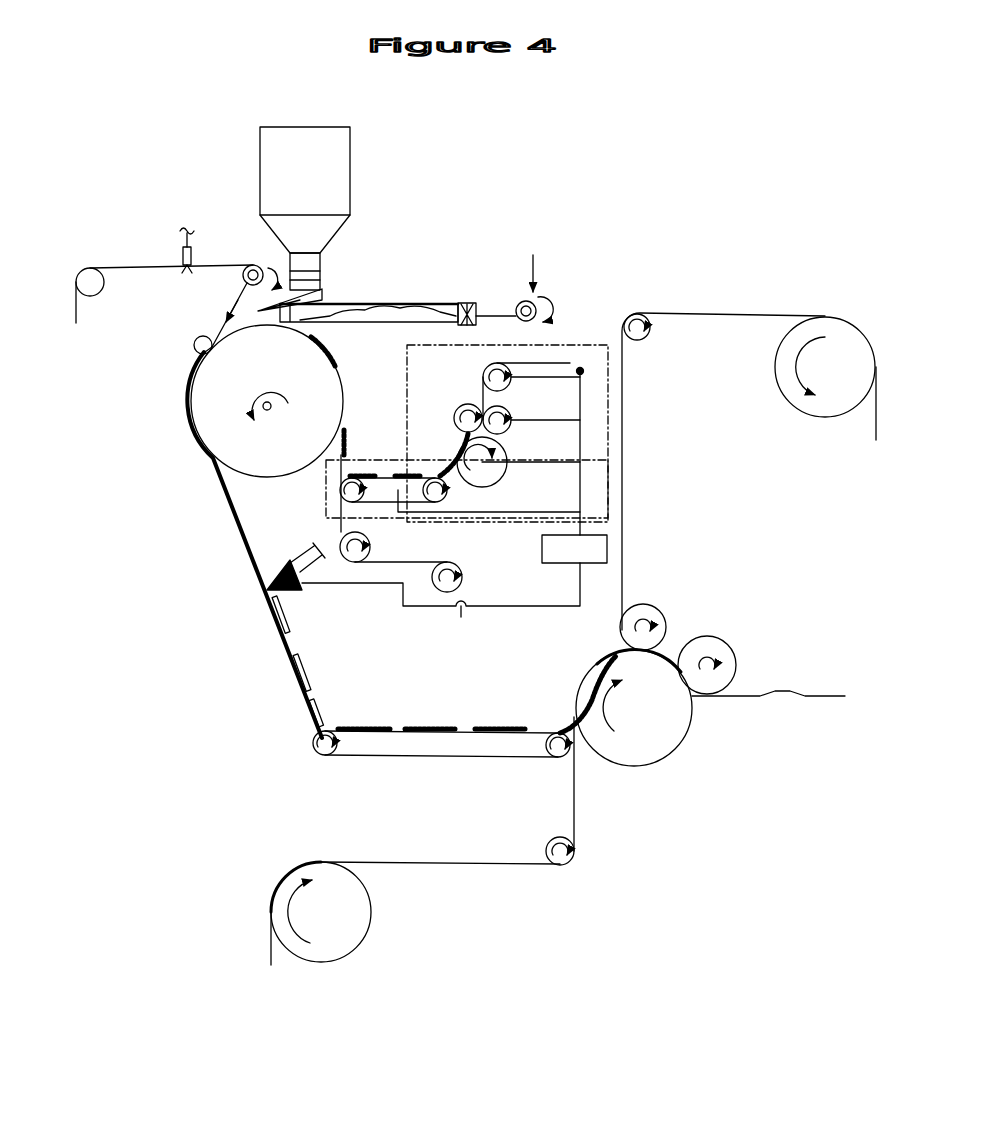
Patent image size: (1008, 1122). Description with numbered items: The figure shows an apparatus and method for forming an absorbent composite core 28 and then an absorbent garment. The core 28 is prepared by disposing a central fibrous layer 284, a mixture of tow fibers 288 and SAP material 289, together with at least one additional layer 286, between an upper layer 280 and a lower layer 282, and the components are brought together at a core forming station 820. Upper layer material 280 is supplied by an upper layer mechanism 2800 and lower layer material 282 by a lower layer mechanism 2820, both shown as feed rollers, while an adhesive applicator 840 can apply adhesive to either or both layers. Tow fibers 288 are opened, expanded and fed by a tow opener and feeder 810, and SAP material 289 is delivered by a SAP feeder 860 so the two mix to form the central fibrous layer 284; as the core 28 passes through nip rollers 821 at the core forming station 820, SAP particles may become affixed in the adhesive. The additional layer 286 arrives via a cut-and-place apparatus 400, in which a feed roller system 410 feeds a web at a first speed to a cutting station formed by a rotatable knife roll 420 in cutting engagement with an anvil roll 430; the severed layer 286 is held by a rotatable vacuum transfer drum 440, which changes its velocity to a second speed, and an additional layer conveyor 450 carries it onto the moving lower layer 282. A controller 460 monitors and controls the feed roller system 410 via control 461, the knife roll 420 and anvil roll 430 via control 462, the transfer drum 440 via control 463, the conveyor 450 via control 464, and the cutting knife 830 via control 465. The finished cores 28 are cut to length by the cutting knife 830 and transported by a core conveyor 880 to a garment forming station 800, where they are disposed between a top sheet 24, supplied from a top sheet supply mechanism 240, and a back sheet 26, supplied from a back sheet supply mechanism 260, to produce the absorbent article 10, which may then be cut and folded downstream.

The SAP feeder 860 is at (354, 195).
The upper layer 280 is at (158, 265).
The upper layer mechanism 2800 is at (90, 288).
The adhesive applicator 840 is at (195, 257).
The superabsorbent polymer (SAP) material 289 is at (246, 317).
The central fibrous layer 284 is at (231, 329).
The nip rollers 821 is at (200, 346).
The core forming station 820 is at (216, 405).
The additional layer 286 is at (340, 365).
The tow opener and feeder 810 is at (418, 303).
The tow fibers 288 is at (500, 314).
The cut-and-place apparatus 400 is at (603, 347).
The feed roller system 410 is at (493, 372).
The knife roll 420 is at (500, 410).
The anvil roll 430 is at (462, 409).
The rotatable vacuum transfer drum 440 is at (472, 455).
The additional layer conveyor 450 is at (420, 477).
The control 461 is at (547, 452).
The control 462 is at (545, 428).
The control 463 is at (531, 471).
The control 464 is at (489, 504).
The controller 460 is at (574, 549).
The control 465 is at (441, 590).
The lower layer 282 is at (431, 561).
The lower layer mechanism 2820 is at (446, 575).
The cutting knife 830 is at (305, 596).
The top sheet 24 is at (628, 405).
The top sheet supply mechanism 240 is at (845, 369).
The absorbent article 10 is at (771, 690).
The absorbent composite core 28 is at (503, 726).
The core conveyor 880 is at (425, 758).
The garment forming station 800 is at (665, 733).
The back sheet 26 is at (503, 861).
The back sheet supply mechanism 260 is at (341, 924).